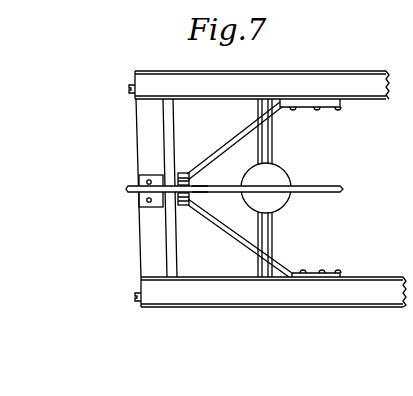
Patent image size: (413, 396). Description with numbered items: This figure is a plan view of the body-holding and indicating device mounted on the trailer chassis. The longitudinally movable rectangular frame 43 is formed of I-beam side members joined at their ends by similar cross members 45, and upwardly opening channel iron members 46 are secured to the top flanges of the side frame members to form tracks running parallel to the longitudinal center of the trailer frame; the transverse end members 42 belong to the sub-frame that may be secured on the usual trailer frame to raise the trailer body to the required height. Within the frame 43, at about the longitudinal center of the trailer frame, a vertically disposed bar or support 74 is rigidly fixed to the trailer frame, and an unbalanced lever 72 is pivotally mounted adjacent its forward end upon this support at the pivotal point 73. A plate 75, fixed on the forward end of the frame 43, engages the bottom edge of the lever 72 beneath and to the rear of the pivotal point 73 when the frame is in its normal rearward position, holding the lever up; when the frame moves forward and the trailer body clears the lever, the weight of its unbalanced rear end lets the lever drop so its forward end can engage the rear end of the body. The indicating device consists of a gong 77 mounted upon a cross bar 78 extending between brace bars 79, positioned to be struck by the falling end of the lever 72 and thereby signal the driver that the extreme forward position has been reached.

The transverse end member 42 is at (177, 258).
The frame 43 is at (340, 70).
The cross member 45 is at (145, 245).
The channel iron member 46 is at (267, 170).
The unbalanced lever 72 is at (352, 172).
The pivotal point 73 is at (190, 172).
The vertically disposed bar or support 74 is at (184, 206).
The plate 75 is at (208, 186).
The gong 77 is at (278, 177).
The cross bar 78 is at (267, 150).
The brace bar 79 is at (257, 129).